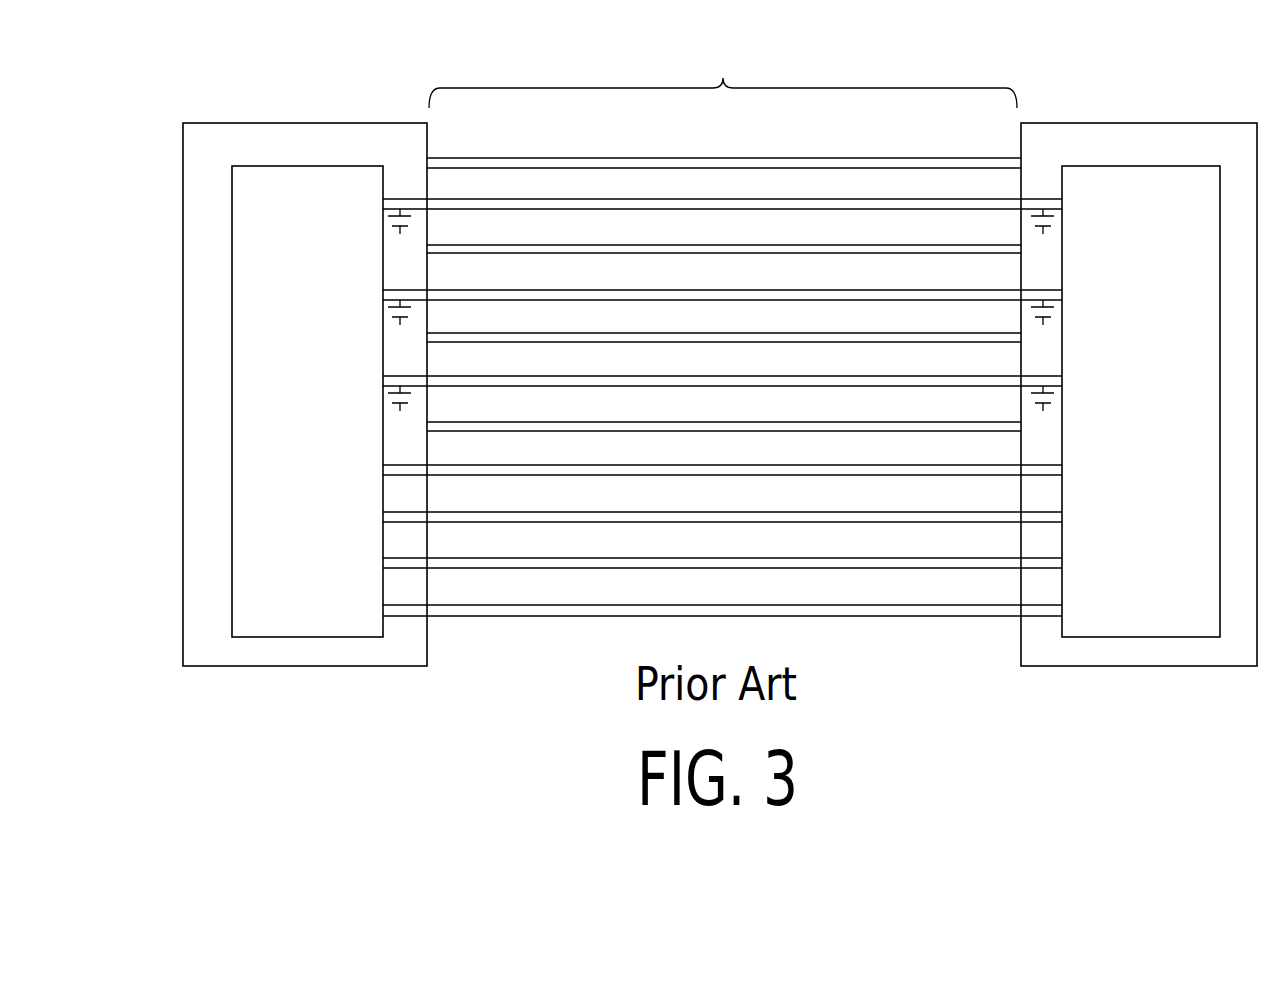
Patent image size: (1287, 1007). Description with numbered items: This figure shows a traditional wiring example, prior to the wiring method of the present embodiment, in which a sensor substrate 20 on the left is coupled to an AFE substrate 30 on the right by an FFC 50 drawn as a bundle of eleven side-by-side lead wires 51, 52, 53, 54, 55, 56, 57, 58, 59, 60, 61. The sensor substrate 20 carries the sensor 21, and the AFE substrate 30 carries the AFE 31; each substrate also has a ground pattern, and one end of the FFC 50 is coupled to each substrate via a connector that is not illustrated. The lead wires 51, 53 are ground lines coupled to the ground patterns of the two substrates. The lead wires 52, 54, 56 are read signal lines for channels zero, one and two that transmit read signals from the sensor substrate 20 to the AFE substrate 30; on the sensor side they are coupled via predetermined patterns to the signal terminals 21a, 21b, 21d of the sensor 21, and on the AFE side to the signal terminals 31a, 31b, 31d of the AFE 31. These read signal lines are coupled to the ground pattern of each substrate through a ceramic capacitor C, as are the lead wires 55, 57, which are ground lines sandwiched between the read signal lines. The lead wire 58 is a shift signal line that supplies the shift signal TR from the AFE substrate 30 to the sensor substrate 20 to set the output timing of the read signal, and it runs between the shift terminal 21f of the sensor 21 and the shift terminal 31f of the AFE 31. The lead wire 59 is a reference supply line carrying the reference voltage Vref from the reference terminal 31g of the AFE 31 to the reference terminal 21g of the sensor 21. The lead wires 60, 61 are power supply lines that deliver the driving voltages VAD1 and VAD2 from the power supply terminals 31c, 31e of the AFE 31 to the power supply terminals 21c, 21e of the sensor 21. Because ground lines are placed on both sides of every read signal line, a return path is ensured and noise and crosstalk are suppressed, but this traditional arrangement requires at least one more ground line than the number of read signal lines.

The sensor substrate 20 is at (285, 123).
The sensor 21 is at (262, 170).
The signal terminal 21a is at (528, 231).
The signal terminal 21b is at (528, 307).
The power supply terminal 21c is at (529, 566).
The signal terminal 21d is at (528, 393).
The power supply terminal 21e is at (528, 612).
The shift terminal 21f is at (531, 473).
The reference terminal 21g is at (528, 520).
The AFE substrate 30 is at (1125, 123).
The AFE 31 is at (1173, 170).
The signal terminal 31a is at (915, 231).
The signal terminal 31b is at (915, 307).
The power supply terminal 31c is at (914, 566).
The signal terminal 31d is at (915, 393).
The power supply terminal 31e is at (915, 612).
The shift terminal 31f is at (913, 473).
The reference terminal 31g is at (915, 520).
The FFC 50 is at (723, 86).
The lead wire 51 is at (655, 156).
The lead wire 52 is at (655, 197).
The lead wire 53 is at (655, 243).
The lead wire 54 is at (655, 288).
The lead wire 55 is at (655, 331).
The lead wire 56 is at (655, 374).
The lead wire 57 is at (655, 420).
The lead wire 58 is at (655, 463).
The lead wire 59 is at (655, 510).
The lead wire 60 is at (655, 556).
The lead wire 61 is at (655, 603).